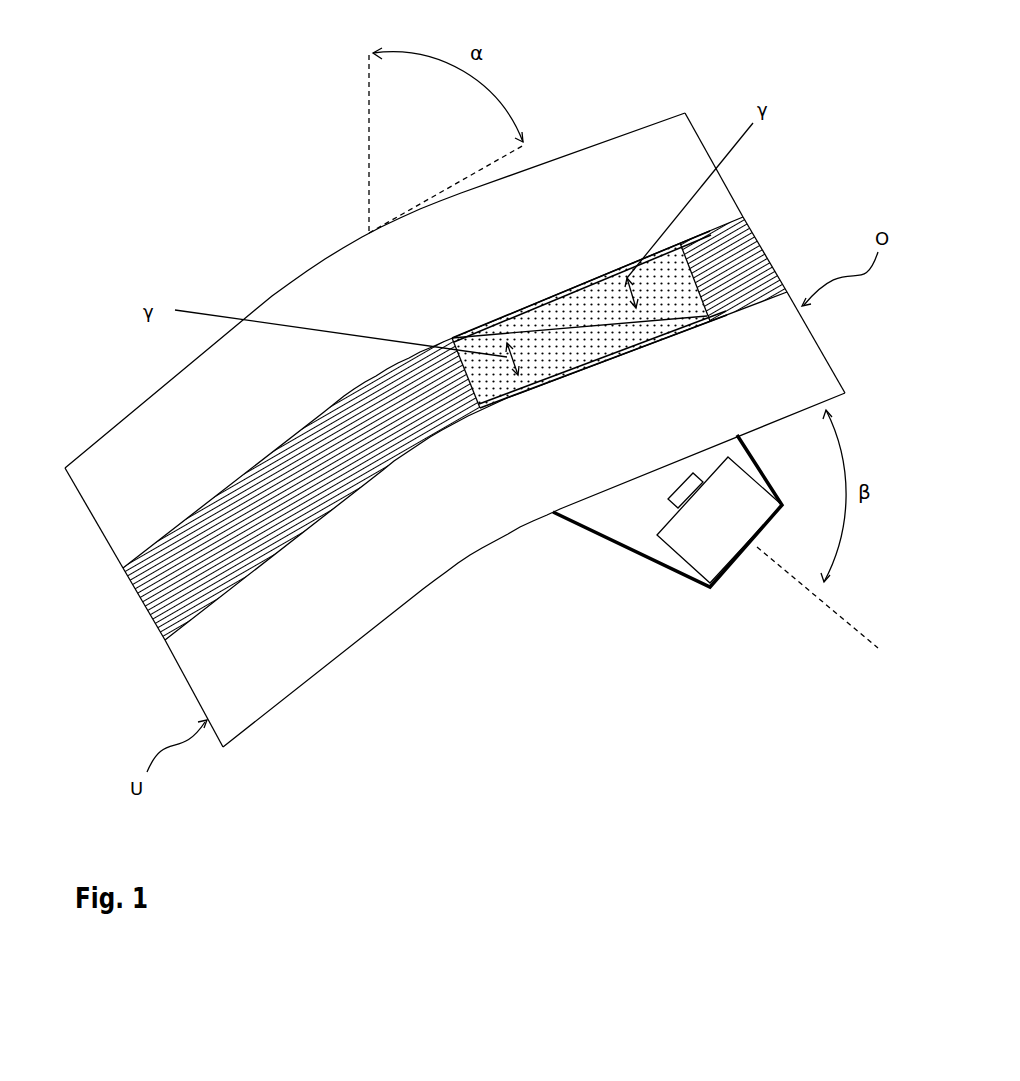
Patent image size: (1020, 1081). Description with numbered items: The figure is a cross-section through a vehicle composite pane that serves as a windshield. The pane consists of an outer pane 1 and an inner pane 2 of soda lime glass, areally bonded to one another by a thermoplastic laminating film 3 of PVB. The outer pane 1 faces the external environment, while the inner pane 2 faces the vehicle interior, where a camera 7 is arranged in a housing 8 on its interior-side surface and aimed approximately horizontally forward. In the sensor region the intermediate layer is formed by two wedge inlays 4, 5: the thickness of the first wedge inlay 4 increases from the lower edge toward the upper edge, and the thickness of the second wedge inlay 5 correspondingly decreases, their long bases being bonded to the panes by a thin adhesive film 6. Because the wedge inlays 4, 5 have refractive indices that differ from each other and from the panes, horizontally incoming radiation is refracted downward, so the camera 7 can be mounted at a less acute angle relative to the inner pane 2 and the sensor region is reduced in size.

The outer pane 1 is at (115, 528).
The inner pane 2 is at (197, 643).
The thermoplastic laminating film 3 is at (163, 592).
The first wedge inlay 4 is at (672, 315).
The second wedge inlay 5 is at (667, 270).
The adhesive film 6 is at (565, 283).
The camera 7 is at (705, 543).
The housing 8 is at (602, 533).